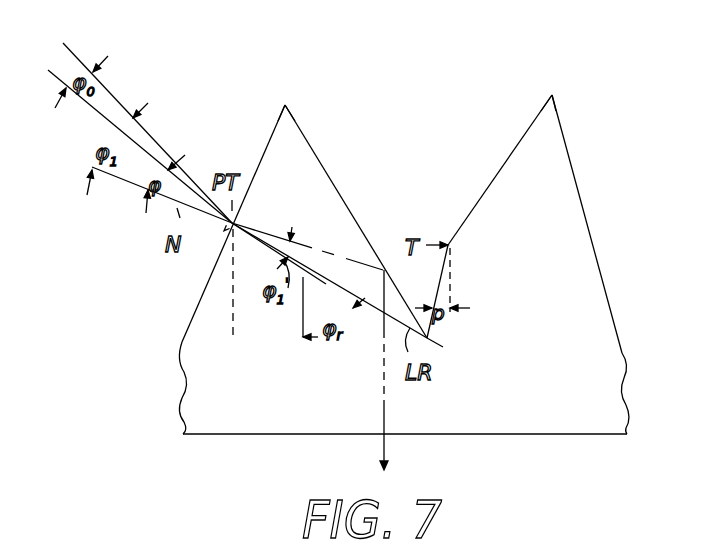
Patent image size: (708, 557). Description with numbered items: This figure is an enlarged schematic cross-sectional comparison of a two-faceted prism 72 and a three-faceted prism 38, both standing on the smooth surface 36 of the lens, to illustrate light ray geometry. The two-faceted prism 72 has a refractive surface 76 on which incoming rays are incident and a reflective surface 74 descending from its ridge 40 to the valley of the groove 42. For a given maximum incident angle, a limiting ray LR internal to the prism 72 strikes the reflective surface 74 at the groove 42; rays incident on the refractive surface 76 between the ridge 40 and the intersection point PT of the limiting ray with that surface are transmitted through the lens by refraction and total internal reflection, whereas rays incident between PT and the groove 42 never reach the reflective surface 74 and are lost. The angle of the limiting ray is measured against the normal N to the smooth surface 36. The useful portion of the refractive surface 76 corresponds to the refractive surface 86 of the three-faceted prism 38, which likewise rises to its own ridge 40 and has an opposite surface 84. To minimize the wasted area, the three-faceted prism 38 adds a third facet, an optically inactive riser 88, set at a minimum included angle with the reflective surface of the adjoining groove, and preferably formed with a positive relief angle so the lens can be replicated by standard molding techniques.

The smooth surface 36 is at (510, 434).
The three-faceted prism 38 is at (511, 224).
The ridge 40 is at (285, 105).
The groove 42 is at (440, 335).
The two-faceted prism 72 is at (304, 223).
The reflective surface 74 is at (319, 163).
The refractive surface 76 is at (269, 140).
The outer surface of second prism 84 is at (570, 152).
The refractive surface 86 is at (498, 172).
The optically inactive riser 88 is at (438, 283).